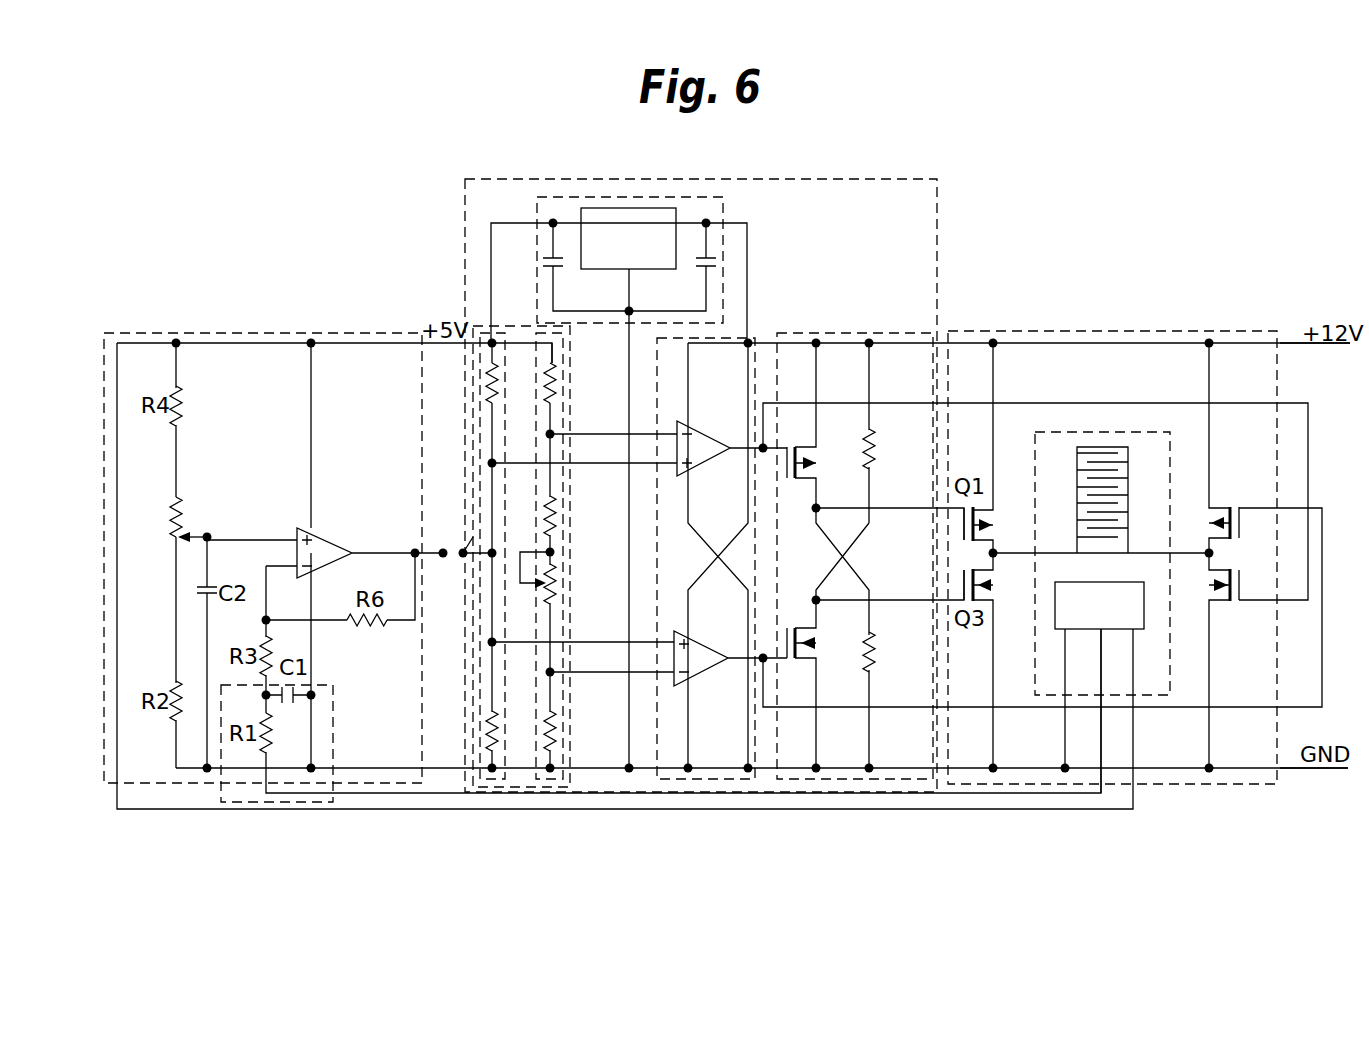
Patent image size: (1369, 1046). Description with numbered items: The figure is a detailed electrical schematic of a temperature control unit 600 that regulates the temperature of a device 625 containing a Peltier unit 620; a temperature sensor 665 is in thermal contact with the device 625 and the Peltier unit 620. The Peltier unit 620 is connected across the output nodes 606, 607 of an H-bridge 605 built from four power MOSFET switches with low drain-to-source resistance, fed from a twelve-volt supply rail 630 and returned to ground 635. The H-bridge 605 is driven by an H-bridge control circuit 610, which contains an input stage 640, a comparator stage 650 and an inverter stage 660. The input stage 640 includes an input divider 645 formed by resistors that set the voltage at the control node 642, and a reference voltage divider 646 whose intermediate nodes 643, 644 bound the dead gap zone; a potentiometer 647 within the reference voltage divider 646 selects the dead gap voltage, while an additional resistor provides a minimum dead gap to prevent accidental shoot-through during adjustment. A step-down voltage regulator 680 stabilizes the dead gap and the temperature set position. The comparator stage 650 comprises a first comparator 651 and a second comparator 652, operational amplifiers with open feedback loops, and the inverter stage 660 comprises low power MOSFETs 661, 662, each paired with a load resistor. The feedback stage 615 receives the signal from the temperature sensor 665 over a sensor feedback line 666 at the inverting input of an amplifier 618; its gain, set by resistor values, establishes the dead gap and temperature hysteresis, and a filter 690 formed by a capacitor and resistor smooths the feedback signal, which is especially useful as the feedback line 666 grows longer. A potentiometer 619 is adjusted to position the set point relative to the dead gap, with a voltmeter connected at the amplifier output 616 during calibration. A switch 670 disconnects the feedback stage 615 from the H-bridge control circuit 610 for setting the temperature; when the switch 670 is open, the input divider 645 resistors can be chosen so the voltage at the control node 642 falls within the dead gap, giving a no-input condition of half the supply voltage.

The temperature control unit 600 is at (347, 233).
The H-bridge 605 is at (1035, 331).
The output node 606 is at (996, 551).
The output node 607 is at (1207, 551).
The H-bridge control circuit 610 is at (850, 179).
The feedback stage 615 is at (147, 333).
The amplifier output 616 is at (414, 556).
The amplifier 618 is at (297, 530).
The potentiometer 619 is at (176, 530).
The Peltier unit 620 is at (1130, 460).
The device 625 is at (1110, 432).
The +12V supply 630 is at (1291, 343).
The ground 635 is at (1287, 769).
The input stage 640 is at (525, 326).
The control node 642 is at (480, 522).
The second divider node 643 is at (556, 432).
The third divider node 644 is at (556, 670).
The input divider 645 is at (503, 755).
The reference voltage divider 646 is at (565, 740).
The potentiometer 647 is at (558, 592).
The comparator stage 650 is at (731, 338).
The first comparator 651 is at (696, 424).
The second comparator 652 is at (692, 633).
The inverter stage 660 is at (860, 333).
The low power MOSFET 661 is at (812, 463).
The low power MOSFET 662 is at (812, 643).
The temperature sensor 665 is at (1090, 677).
The sensor feedback line 666 is at (1030, 795).
The switch 670 is at (468, 540).
The step-down voltage regulator 680 is at (668, 197).
The filter 690 is at (238, 802).